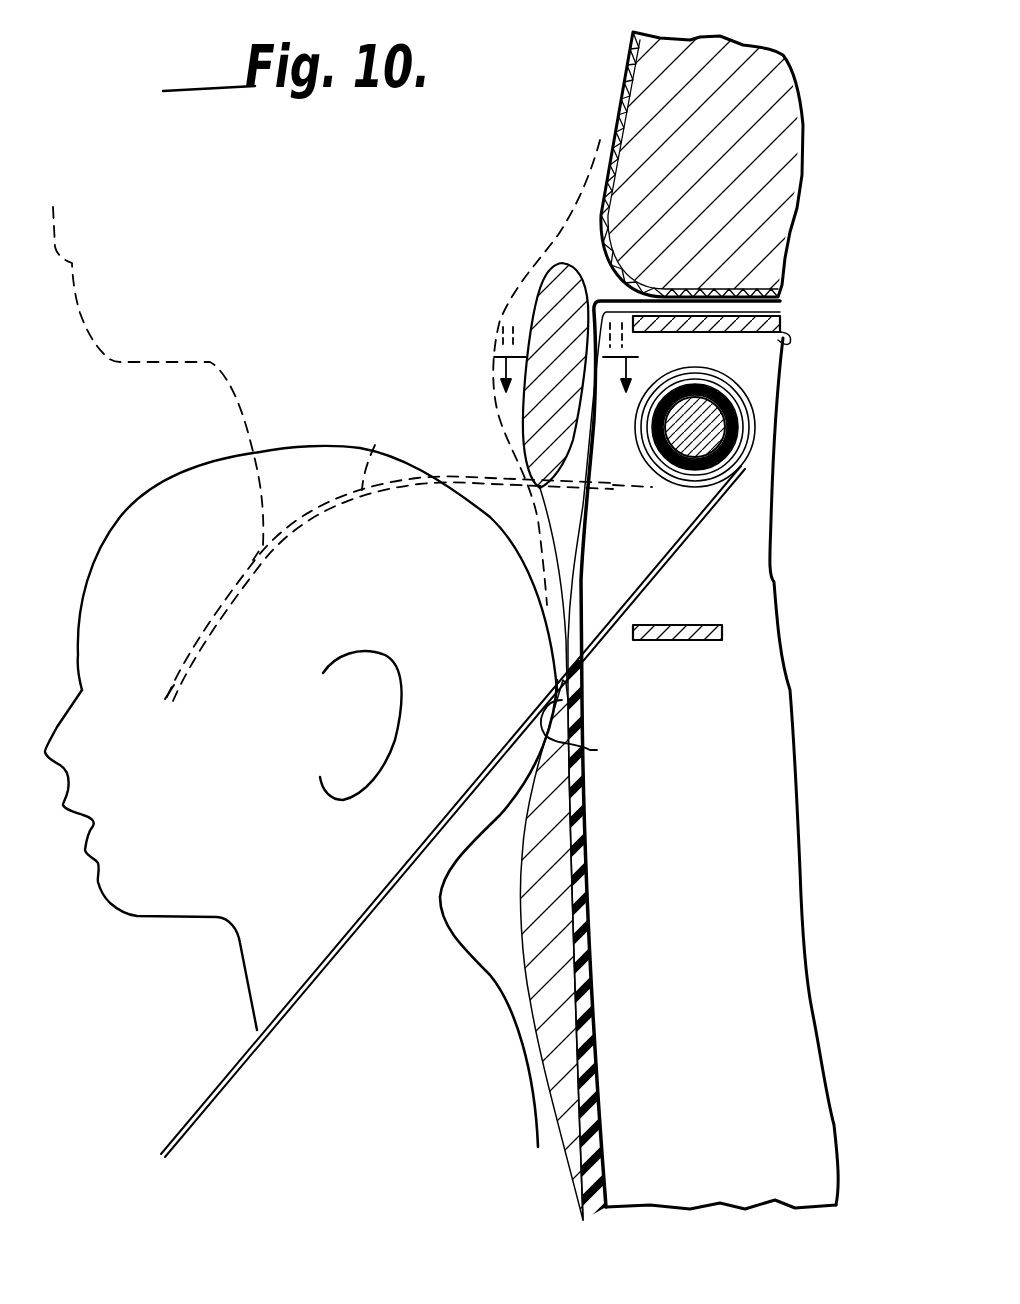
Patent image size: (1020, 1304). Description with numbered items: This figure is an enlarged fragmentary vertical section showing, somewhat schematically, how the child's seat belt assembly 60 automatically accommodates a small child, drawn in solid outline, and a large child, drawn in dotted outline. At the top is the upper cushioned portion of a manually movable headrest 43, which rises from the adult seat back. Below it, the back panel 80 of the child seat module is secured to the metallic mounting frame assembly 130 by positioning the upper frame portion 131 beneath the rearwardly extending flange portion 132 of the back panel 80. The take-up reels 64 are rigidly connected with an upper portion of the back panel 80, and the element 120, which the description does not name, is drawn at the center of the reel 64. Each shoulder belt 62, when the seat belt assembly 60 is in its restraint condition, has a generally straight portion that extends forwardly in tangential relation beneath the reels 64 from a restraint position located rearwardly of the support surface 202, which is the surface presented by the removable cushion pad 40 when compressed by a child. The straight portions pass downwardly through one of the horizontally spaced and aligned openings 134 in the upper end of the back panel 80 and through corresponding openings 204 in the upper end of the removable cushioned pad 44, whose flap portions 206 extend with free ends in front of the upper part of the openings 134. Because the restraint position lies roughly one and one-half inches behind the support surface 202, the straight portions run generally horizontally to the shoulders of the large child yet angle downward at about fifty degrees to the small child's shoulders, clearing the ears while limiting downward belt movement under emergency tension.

The removable cushion pad 40 is at (525, 1006).
The headrest 43 is at (643, 127).
The removable cushioned pad 44 is at (532, 919).
The child's seat belt assembly 60 is at (663, 497).
The shoulder belt 62 is at (381, 452).
The take-up reel 64 is at (738, 393).
The back panel 80 is at (584, 880).
The shaft 120 is at (730, 438).
The mounting frame assembly 130 is at (735, 632).
The upper frame portion 131 is at (772, 338).
The rearwardly extending flange portion 132 is at (757, 298).
The opening 134 is at (578, 666).
The support surface 202 is at (595, 735).
The opening 204 is at (548, 497).
The flap portion 206 is at (525, 396).